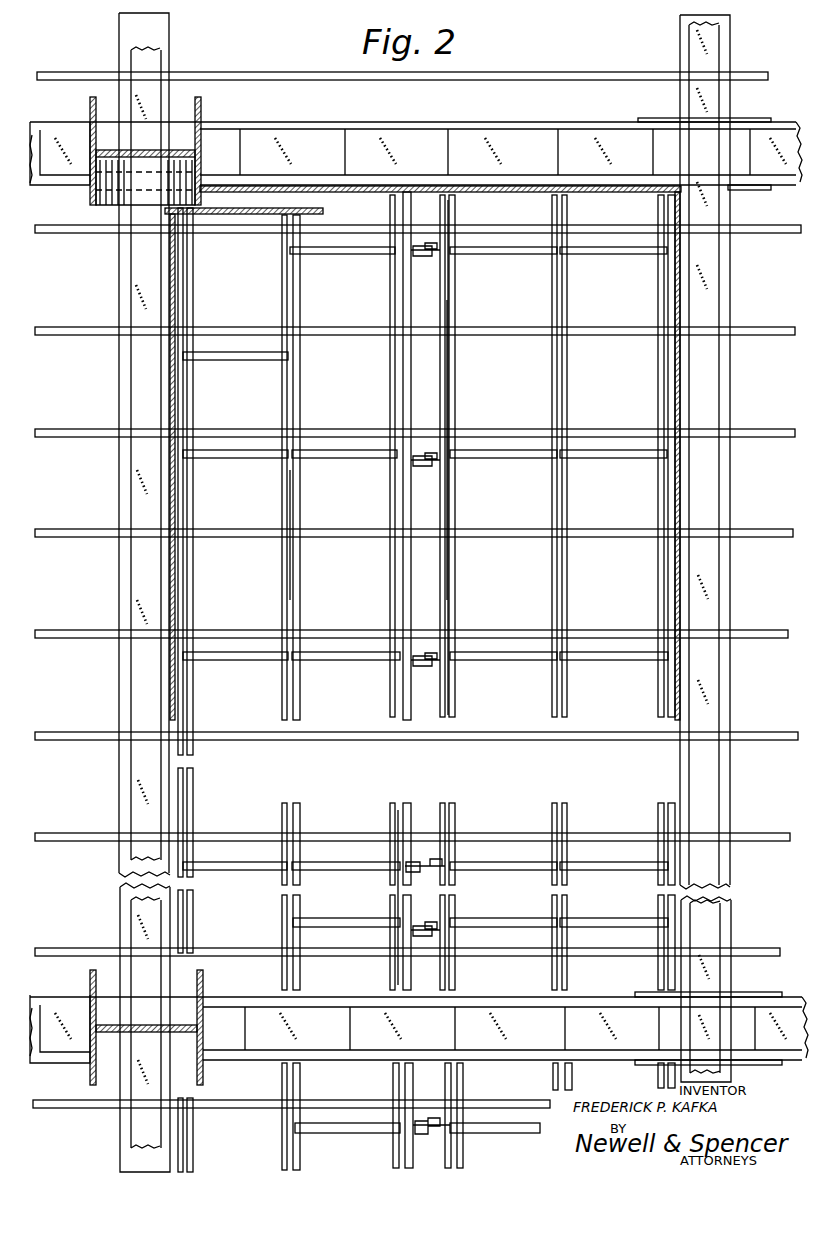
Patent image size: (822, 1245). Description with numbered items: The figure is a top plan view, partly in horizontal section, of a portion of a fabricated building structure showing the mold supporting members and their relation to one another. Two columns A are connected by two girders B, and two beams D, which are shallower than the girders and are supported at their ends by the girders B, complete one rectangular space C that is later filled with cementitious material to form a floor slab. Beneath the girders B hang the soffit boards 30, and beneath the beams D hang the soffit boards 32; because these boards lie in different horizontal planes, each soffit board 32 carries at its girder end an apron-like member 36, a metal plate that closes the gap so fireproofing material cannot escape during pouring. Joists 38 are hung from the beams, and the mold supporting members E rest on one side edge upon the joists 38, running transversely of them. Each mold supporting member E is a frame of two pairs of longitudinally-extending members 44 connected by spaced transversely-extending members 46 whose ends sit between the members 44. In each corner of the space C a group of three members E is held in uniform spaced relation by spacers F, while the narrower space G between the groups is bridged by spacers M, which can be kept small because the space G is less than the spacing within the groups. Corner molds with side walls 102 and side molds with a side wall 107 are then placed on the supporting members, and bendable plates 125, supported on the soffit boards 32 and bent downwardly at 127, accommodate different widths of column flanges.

The soffit board 30 is at (453, 122).
The soffit board 32 is at (169, 24).
The apron-like member 36 is at (645, 119).
The joist 38 is at (316, 72).
The longitudinally-extending member 44 is at (450, 372).
The transversely-extending member 46 is at (451, 306).
The side wall 102 is at (235, 216).
The side wall 107 is at (251, 185).
The plate 125 is at (113, 148).
The bent-down portion 127 is at (105, 198).
The column A is at (203, 105).
The girder B is at (41, 135).
The rectangular space C is at (490, 200).
The beam D is at (137, 50).
The mold supporting member E is at (195, 583).
The spacer F is at (345, 251).
The space G is at (418, 680).
The spacer M is at (420, 258).